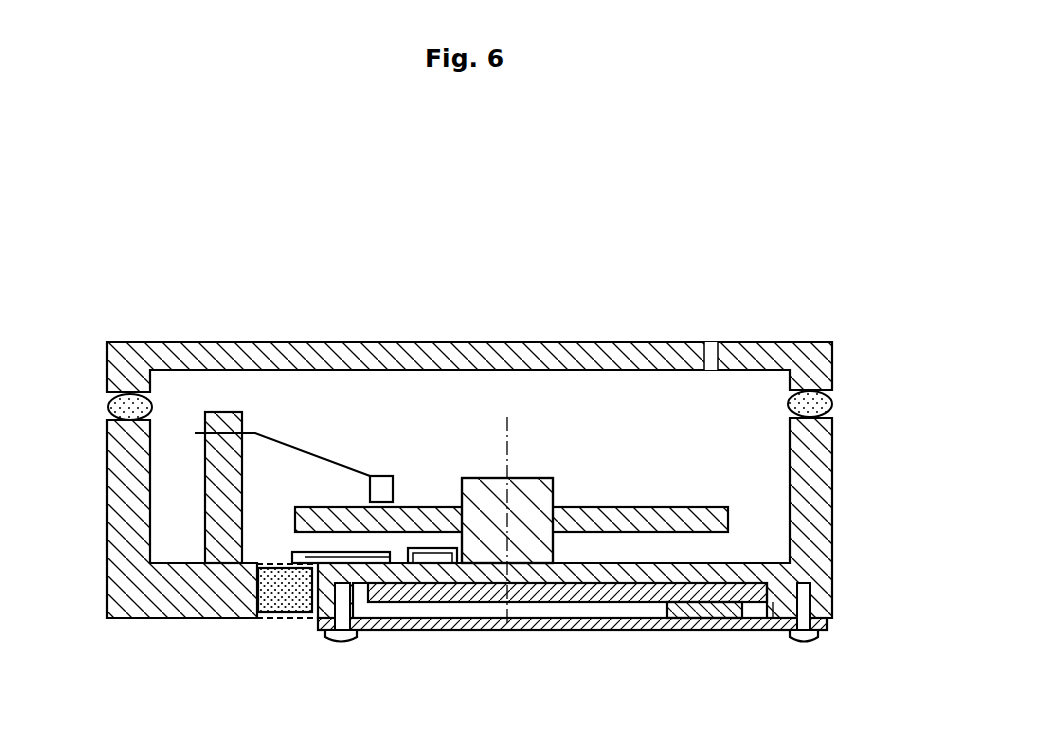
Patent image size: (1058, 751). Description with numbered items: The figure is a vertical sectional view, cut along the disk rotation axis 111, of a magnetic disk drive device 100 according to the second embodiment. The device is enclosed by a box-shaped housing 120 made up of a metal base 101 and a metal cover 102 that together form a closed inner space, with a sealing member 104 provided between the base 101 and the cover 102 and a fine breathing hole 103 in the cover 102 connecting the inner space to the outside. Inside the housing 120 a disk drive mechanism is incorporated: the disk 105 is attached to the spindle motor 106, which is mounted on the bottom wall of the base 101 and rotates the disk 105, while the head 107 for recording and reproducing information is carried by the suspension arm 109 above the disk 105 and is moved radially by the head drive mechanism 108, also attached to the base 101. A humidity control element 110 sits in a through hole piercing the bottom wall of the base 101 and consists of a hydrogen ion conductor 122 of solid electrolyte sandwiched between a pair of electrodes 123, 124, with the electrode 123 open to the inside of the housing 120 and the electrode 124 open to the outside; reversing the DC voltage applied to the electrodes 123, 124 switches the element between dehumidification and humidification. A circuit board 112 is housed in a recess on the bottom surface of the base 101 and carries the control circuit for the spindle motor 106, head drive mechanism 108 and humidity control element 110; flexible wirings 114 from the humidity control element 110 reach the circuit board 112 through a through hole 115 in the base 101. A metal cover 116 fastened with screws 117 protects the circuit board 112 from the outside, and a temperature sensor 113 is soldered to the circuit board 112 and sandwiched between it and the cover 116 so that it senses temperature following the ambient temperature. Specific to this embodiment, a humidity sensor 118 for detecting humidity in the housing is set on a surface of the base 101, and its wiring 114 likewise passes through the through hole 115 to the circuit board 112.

The disk drive device 100 is at (477, 466).
The base 101 is at (815, 565).
The cover 102 is at (517, 336).
The fine breathing hole 103 is at (716, 342).
The sealing member 104 is at (108, 407).
The disk 105 is at (675, 508).
The spindle motor 106 is at (540, 548).
The head 107 is at (383, 485).
The head drive mechanism 108 is at (203, 500).
The suspension arm 109 is at (310, 452).
The humidity control element 110 is at (282, 600).
The disk rotation axis 111 is at (507, 425).
The circuit board 112 is at (533, 602).
The temperature sensor 113 is at (715, 618).
The wirings 114 is at (332, 551).
The through hole 115 is at (440, 550).
The cover 116 is at (615, 632).
The screws 117 is at (341, 644).
The humidity sensor 118 is at (453, 548).
The housing 120 is at (517, 449).
The hydrogen ion conductor 122 is at (273, 622).
The electrode 123 is at (240, 563).
The electrode 124 is at (257, 618).